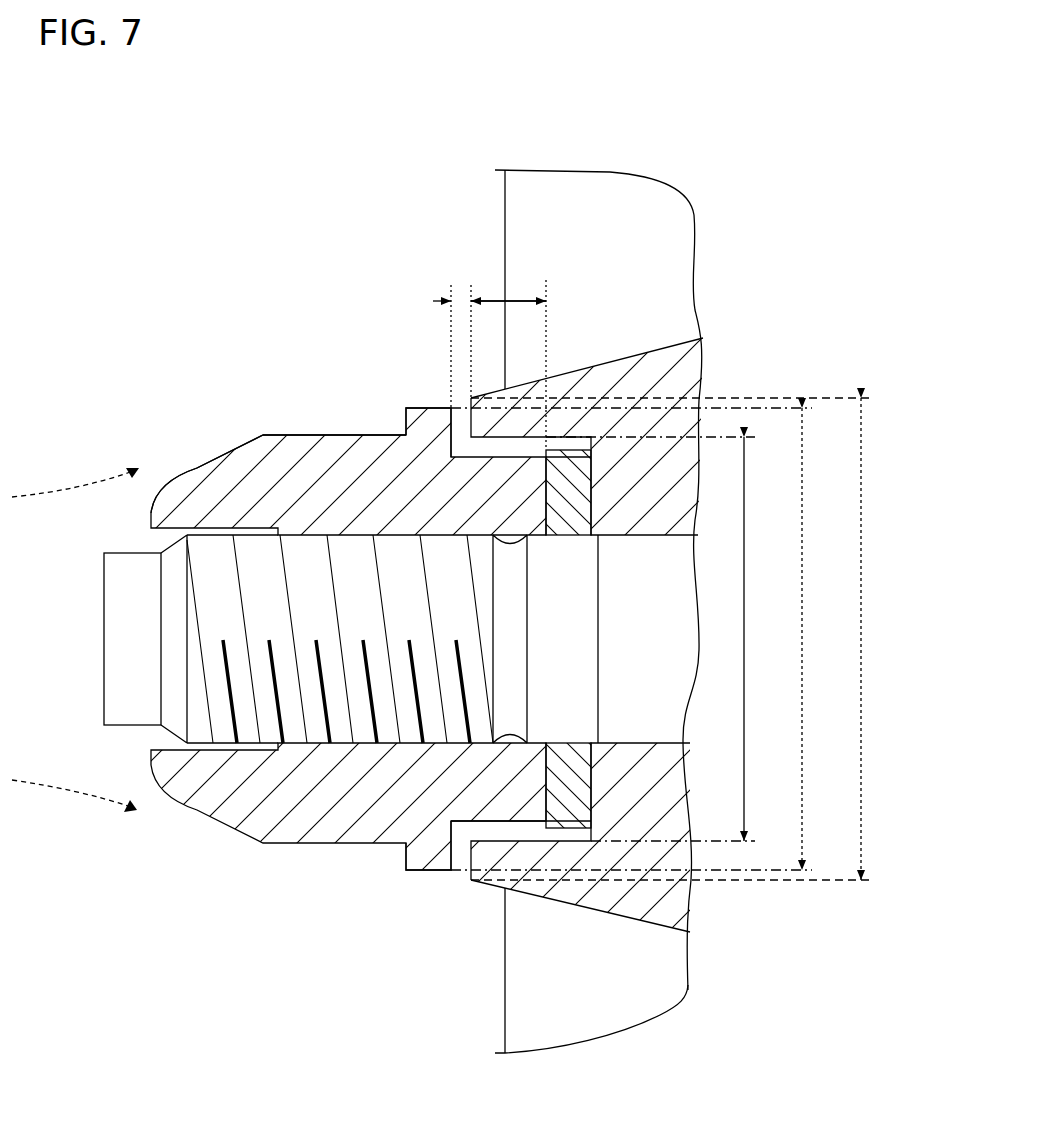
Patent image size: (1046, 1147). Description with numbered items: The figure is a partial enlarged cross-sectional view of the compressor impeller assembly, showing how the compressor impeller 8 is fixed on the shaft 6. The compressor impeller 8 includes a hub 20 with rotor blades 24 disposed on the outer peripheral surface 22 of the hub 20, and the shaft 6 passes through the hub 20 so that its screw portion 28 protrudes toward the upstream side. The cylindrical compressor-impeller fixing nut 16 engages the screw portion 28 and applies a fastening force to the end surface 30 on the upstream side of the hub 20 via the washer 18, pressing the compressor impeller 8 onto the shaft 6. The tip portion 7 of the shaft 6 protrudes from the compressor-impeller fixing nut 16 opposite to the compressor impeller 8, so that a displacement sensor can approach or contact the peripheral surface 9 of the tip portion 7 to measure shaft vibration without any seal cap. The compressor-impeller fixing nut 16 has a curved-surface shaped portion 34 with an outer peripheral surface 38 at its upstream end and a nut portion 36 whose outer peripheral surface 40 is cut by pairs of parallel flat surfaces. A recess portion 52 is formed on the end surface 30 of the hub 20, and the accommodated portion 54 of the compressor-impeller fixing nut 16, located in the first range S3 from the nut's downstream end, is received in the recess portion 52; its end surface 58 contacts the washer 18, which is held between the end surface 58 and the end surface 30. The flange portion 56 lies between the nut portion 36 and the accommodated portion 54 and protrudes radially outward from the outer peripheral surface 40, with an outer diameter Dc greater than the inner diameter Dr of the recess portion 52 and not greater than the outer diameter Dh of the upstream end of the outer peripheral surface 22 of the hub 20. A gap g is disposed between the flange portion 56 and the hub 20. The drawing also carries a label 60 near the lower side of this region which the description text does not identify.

The shaft 6 is at (645, 712).
The tip portion 7 is at (115, 690).
The compressor impeller 8 is at (634, 192).
The peripheral surface 9 is at (128, 728).
The compressor-impeller fixing nut 16 is at (215, 818).
The washer 18 is at (562, 763).
The hub 20 is at (652, 376).
The outer peripheral surface 22 is at (596, 368).
The rotor blades 24 is at (558, 192).
The screw portion 28 is at (345, 713).
The end surface 30 is at (580, 810).
The curved-surface shaped portion 34 is at (232, 467).
The nut portion 36 is at (372, 460).
The outer peripheral surface 38 is at (197, 470).
The outer peripheral surface 40 is at (322, 435).
The recess portion 52 is at (556, 770).
The accommodated portion 54 is at (503, 445).
The flange portion 56 is at (426, 410).
The end surface 58 is at (470, 882).
The recess 60 is at (517, 835).
The gap g is at (462, 297).
The first range S3 is at (520, 297).
The inner diameter of the recess portion Dr is at (746, 641).
The outer diameter of the flange portion Dc is at (804, 641).
The outer diameter of the upstream end of the hub outer peripheral surface Dh is at (863, 641).